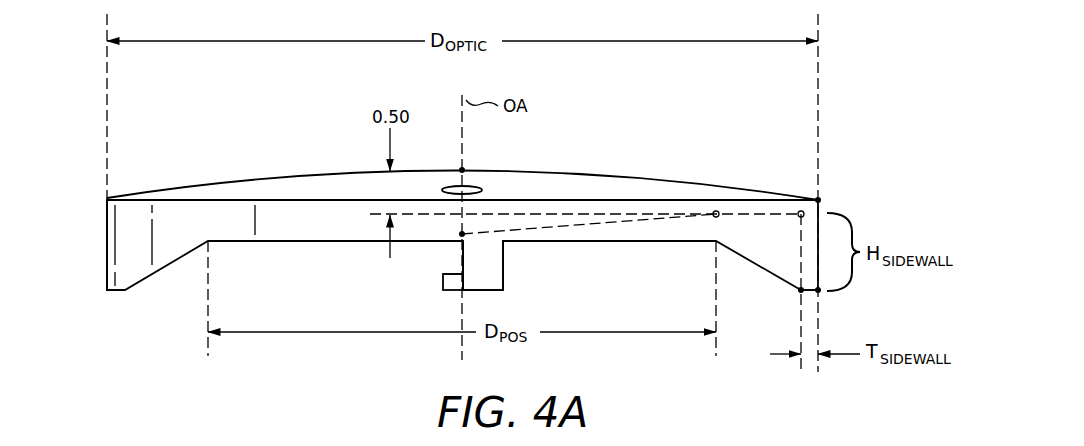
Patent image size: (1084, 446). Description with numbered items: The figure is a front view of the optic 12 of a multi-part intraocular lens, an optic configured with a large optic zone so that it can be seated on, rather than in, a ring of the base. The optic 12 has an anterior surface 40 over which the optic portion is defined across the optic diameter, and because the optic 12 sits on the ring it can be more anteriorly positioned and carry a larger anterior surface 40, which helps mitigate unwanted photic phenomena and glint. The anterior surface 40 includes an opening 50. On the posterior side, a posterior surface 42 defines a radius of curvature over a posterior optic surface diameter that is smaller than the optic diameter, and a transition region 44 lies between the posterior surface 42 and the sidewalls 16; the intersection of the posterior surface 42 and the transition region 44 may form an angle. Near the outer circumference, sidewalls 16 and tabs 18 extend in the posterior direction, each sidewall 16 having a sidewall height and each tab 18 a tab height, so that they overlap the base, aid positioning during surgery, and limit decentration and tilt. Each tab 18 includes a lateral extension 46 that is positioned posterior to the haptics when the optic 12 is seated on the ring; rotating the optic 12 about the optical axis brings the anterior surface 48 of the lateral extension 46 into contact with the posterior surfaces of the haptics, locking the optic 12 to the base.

The optic 12 is at (822, 209).
The sidewall 16 is at (122, 241).
The tab 18 is at (503, 270).
The anterior surface 40 is at (703, 181).
The posterior surface 42 is at (620, 228).
The transition region 44 is at (752, 218).
The lateral extension 46 is at (443, 286).
The anterior surface of lateral extension 48 is at (452, 272).
The opening 50 is at (475, 186).